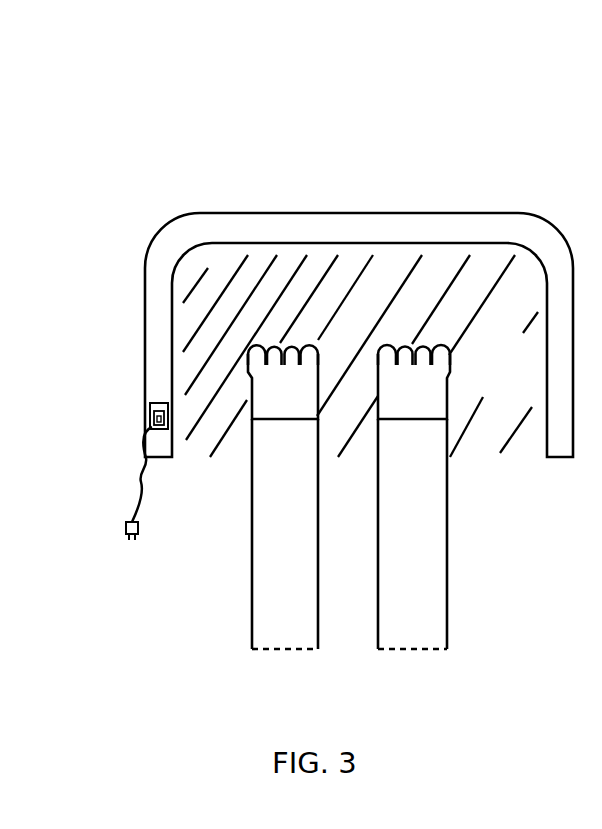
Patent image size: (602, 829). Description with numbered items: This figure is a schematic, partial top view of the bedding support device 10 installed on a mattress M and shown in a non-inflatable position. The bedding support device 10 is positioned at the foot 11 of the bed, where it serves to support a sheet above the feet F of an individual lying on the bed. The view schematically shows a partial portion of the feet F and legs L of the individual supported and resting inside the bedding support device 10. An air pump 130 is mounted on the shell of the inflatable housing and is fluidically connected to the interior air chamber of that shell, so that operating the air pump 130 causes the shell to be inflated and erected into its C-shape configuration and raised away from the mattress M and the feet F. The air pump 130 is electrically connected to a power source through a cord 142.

The bedding support device 10 is at (387, 202).
The foot of the bed 11 is at (360, 250).
The mattress M is at (522, 379).
The feet F is at (283, 403).
The legs L is at (250, 552).
The air pump 130 is at (149, 399).
The cord 142 is at (138, 497).